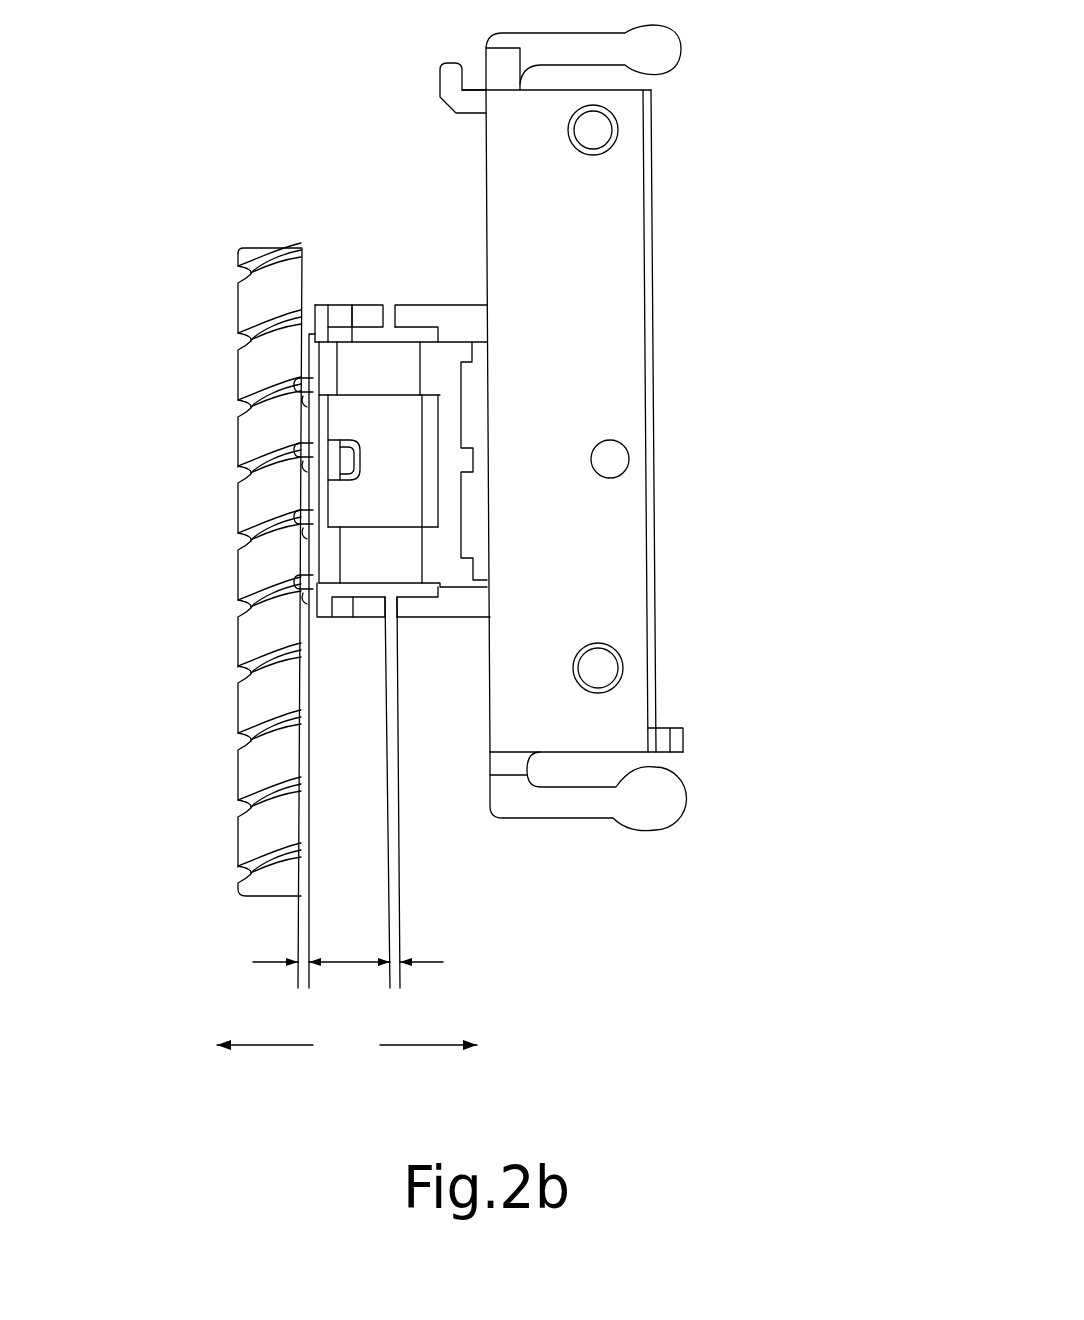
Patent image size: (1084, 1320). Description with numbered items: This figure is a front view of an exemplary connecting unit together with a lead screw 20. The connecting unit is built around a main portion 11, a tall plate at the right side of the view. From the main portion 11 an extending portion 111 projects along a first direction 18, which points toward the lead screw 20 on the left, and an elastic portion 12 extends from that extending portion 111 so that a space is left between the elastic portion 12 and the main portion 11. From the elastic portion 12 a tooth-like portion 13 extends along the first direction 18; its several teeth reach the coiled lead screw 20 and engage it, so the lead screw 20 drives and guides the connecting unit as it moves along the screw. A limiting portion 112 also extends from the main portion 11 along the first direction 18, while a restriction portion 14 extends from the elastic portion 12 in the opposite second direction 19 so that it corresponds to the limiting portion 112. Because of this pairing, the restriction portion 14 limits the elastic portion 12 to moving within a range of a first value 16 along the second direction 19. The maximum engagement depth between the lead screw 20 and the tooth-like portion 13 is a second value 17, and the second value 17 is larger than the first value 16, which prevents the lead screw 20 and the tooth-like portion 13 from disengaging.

The main portion 11 is at (633, 188).
The elastic portion 12 is at (322, 320).
The tooth-like portion 13 is at (297, 385).
The restriction portion 14 is at (364, 313).
The first value 16 is at (438, 792).
The second value 17 is at (300, 962).
The first direction 18 is at (240, 1045).
The second direction 19 is at (452, 1045).
The lead screw 20 is at (262, 303).
The extending portion 111 is at (355, 357).
The limiting portion 112 is at (413, 313).